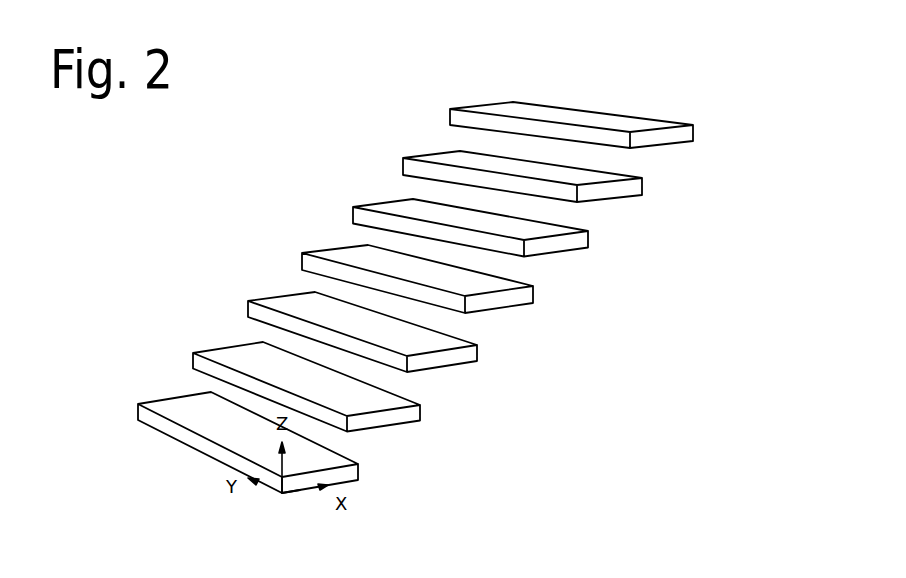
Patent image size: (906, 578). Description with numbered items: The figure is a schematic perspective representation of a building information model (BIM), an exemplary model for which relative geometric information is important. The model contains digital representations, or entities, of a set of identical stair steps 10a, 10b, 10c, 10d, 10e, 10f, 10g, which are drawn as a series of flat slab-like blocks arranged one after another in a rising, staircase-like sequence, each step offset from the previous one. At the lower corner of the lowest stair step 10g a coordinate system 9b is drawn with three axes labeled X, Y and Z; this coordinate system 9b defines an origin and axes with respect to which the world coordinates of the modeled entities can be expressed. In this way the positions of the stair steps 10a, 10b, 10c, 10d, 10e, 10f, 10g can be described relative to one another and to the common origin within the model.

The stair step 10a is at (686, 135).
The stair step 10b is at (636, 189).
The stair step 10c is at (581, 240).
The stair step 10d is at (523, 297).
The stair step 10e is at (473, 354).
The stair step 10f is at (410, 412).
The stair step 10g is at (350, 477).
The coordinate system 9b is at (300, 494).